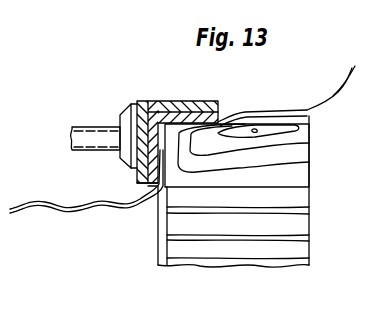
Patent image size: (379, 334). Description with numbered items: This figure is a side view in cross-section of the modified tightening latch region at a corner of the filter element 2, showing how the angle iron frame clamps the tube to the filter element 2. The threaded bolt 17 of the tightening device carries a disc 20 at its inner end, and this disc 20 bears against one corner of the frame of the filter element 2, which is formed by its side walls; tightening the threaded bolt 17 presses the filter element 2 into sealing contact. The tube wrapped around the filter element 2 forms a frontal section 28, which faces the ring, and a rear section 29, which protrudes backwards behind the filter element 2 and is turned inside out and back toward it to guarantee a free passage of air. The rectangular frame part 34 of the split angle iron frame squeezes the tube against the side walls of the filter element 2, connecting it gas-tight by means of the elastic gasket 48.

The filter element 2 is at (252, 222).
The threaded bolt 17 is at (82, 134).
The disc 20 is at (129, 125).
The frontal tube section 28 is at (331, 99).
The rear tube section 29 is at (54, 210).
The frame part 34 is at (138, 183).
The elastic gasket 48 is at (148, 194).